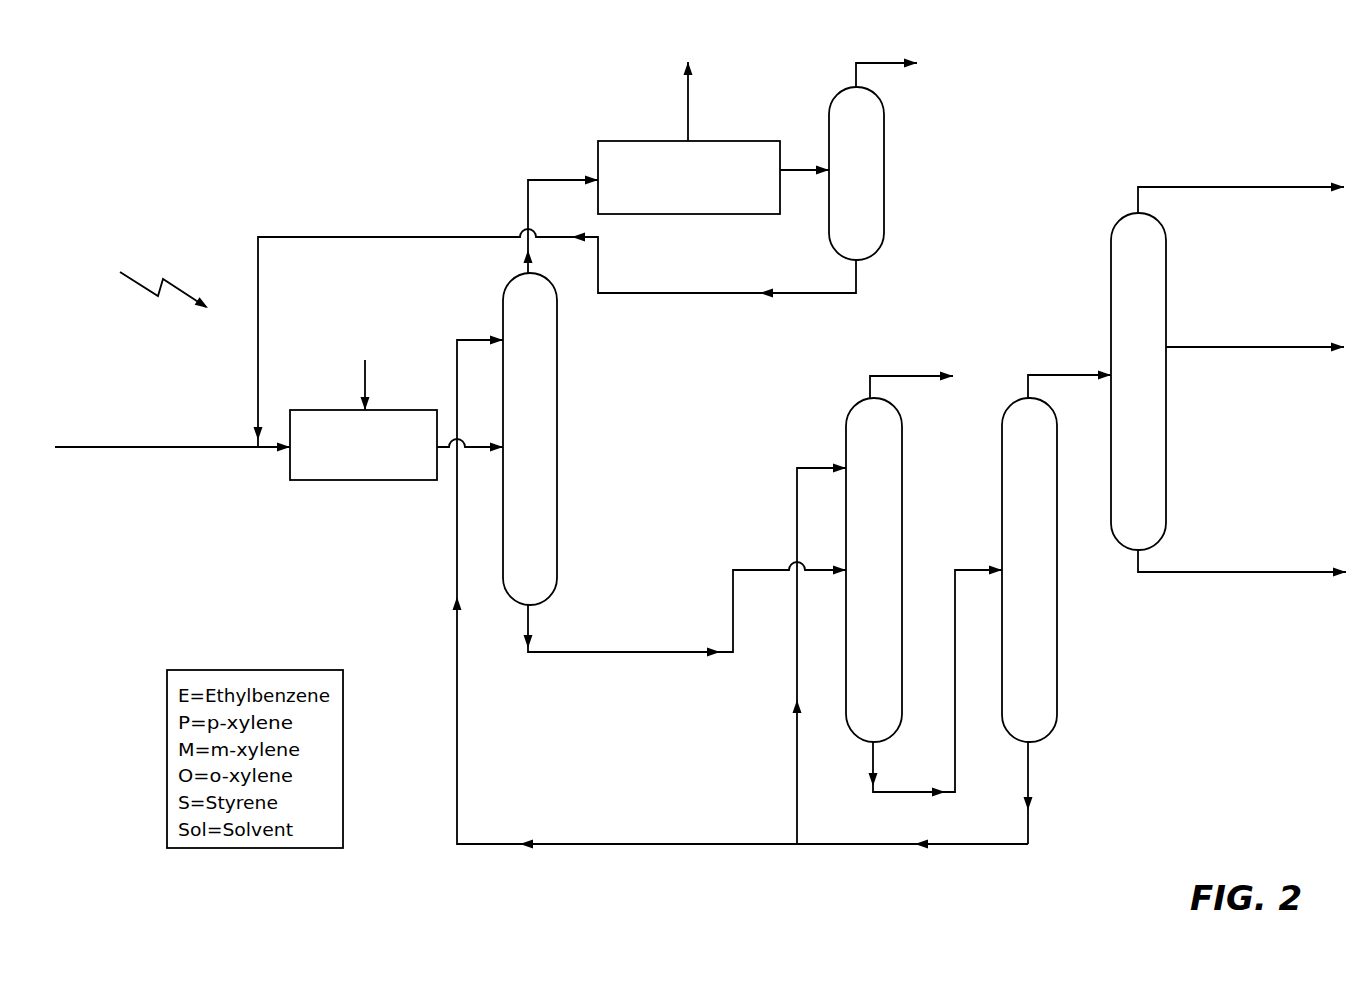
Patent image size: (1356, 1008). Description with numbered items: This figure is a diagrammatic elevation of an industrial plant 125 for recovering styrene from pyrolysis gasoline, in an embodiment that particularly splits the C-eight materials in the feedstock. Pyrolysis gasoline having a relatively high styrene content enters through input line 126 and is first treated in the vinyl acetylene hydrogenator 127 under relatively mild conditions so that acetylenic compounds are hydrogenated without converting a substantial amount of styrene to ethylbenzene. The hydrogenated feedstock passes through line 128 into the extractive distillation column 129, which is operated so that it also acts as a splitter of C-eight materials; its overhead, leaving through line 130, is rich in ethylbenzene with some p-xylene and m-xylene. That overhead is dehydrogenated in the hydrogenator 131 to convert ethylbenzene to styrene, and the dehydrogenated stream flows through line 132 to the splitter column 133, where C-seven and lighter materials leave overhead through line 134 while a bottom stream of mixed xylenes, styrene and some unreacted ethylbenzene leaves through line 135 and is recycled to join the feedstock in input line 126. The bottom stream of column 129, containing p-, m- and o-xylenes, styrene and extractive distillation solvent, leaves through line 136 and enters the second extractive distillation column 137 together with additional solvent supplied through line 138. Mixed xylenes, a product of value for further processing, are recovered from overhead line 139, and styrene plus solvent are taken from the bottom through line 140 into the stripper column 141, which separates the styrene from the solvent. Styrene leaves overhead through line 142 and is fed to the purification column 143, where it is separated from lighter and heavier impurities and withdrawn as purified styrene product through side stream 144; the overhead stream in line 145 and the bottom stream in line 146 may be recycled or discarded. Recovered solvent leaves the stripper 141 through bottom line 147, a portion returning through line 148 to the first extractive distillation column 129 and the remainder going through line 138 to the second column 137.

The plant 125 is at (152, 281).
The input line 126 is at (237, 449).
The vinyl acetylene hydrogenator 127 is at (327, 481).
The line 128 is at (473, 449).
The extractive distillation column 129 is at (557, 520).
The line 130 is at (527, 200).
The hydrogenator 131 is at (652, 140).
The line 132 is at (793, 174).
The splitter column 133 is at (884, 150).
The line 134 is at (888, 66).
The line 135 is at (682, 294).
The line 136 is at (528, 630).
The second extractive distillation column 137 is at (846, 433).
The line 138 is at (797, 498).
The overhead line 139 is at (868, 382).
The line 140 is at (873, 760).
The stripper column 141 is at (1057, 672).
The line 142 is at (1025, 382).
The purification column 143 is at (1108, 275).
The side stream 144 is at (1258, 349).
The line 145 is at (1258, 189).
The line 146 is at (1250, 574).
The bottom line 147 is at (1028, 760).
The line 148 is at (457, 740).